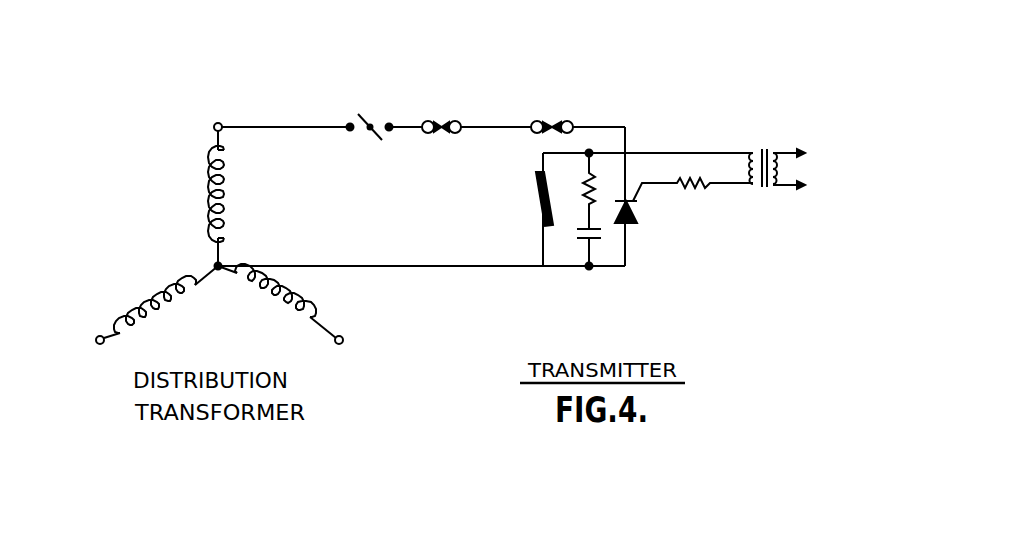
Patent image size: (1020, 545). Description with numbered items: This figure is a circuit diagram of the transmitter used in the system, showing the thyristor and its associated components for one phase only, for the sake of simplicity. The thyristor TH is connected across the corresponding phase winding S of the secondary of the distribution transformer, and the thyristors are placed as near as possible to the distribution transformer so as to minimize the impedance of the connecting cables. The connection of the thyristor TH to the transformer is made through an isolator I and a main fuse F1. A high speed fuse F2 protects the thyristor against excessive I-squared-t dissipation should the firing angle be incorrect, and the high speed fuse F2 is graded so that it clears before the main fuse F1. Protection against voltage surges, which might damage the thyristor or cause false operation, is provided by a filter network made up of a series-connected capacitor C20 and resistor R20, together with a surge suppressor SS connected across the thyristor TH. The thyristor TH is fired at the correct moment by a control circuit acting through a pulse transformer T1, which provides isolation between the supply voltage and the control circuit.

The phase winding S is at (228, 194).
The isolator I is at (355, 153).
The main fuse F1 is at (418, 165).
The high speed fuse F2 is at (610, 82).
The surge suppressor SS is at (527, 199).
The resistor R20 is at (574, 191).
The capacitor C20 is at (577, 247).
The thyristor TH is at (684, 204).
The pulse transformer T1 is at (802, 204).